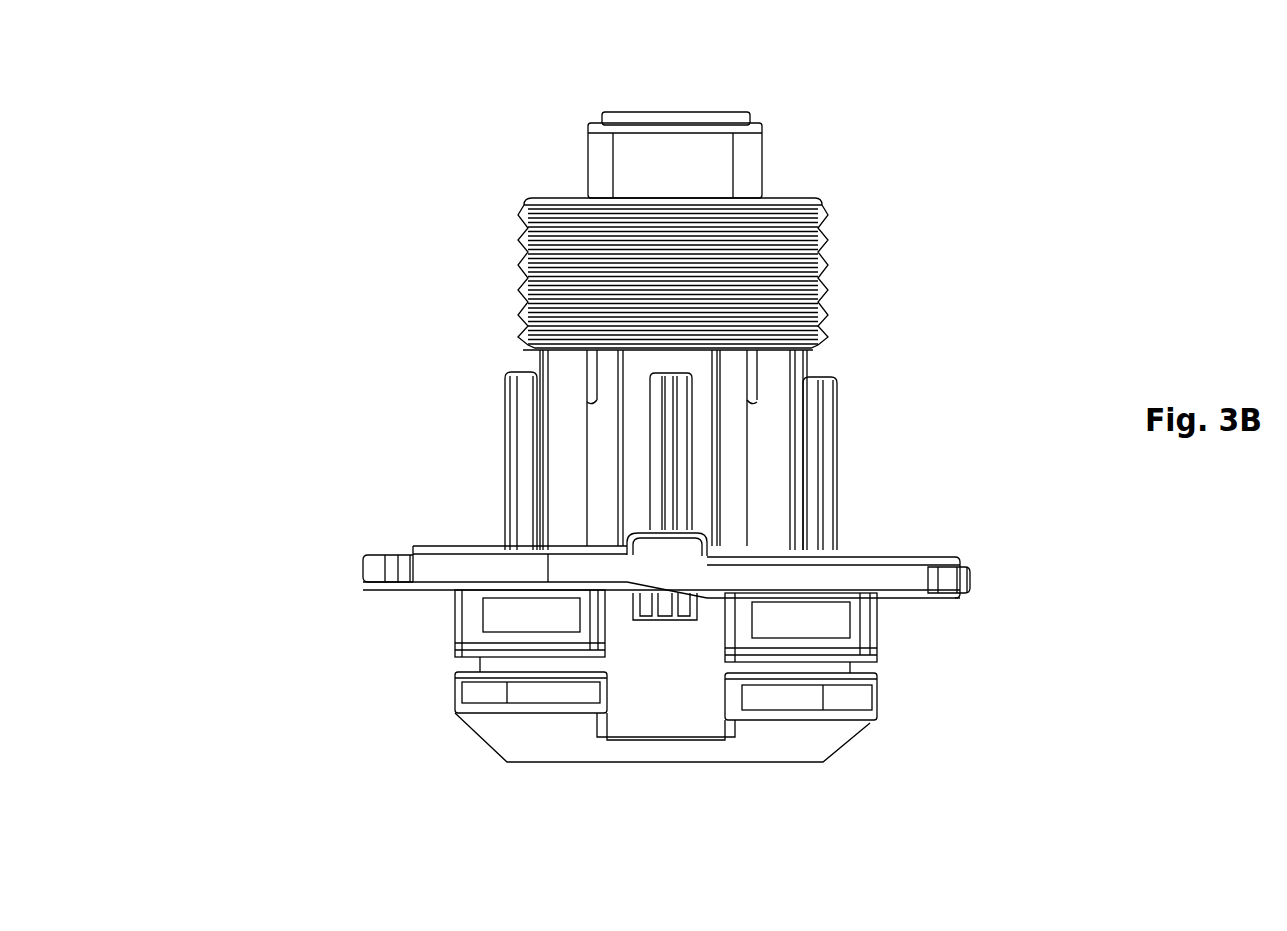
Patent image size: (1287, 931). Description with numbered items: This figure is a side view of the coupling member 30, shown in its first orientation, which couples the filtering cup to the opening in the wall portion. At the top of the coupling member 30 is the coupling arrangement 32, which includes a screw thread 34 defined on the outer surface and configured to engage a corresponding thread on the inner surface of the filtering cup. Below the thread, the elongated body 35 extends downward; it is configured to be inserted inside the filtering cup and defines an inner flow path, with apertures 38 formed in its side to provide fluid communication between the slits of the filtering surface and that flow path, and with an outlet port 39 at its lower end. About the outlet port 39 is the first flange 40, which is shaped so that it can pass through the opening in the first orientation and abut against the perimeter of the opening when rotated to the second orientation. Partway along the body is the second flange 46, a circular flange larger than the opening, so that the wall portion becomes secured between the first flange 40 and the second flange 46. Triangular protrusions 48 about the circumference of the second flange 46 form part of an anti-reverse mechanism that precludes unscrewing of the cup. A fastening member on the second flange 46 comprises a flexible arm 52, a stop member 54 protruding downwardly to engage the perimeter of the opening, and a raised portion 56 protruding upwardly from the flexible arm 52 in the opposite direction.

The coupling member 30 is at (242, 355).
The coupling arrangement 32 is at (572, 190).
The screw thread 34 is at (832, 240).
The elongated body 35 is at (535, 445).
The apertures 38 is at (668, 427).
The outlet port 39 is at (575, 766).
The first flange 40 is at (850, 702).
The second flange 46 is at (895, 577).
The triangular protrusions 48 is at (405, 548).
The flexible arm 52 is at (592, 573).
The stop member 54 is at (668, 607).
The raised portion 56 is at (665, 553).